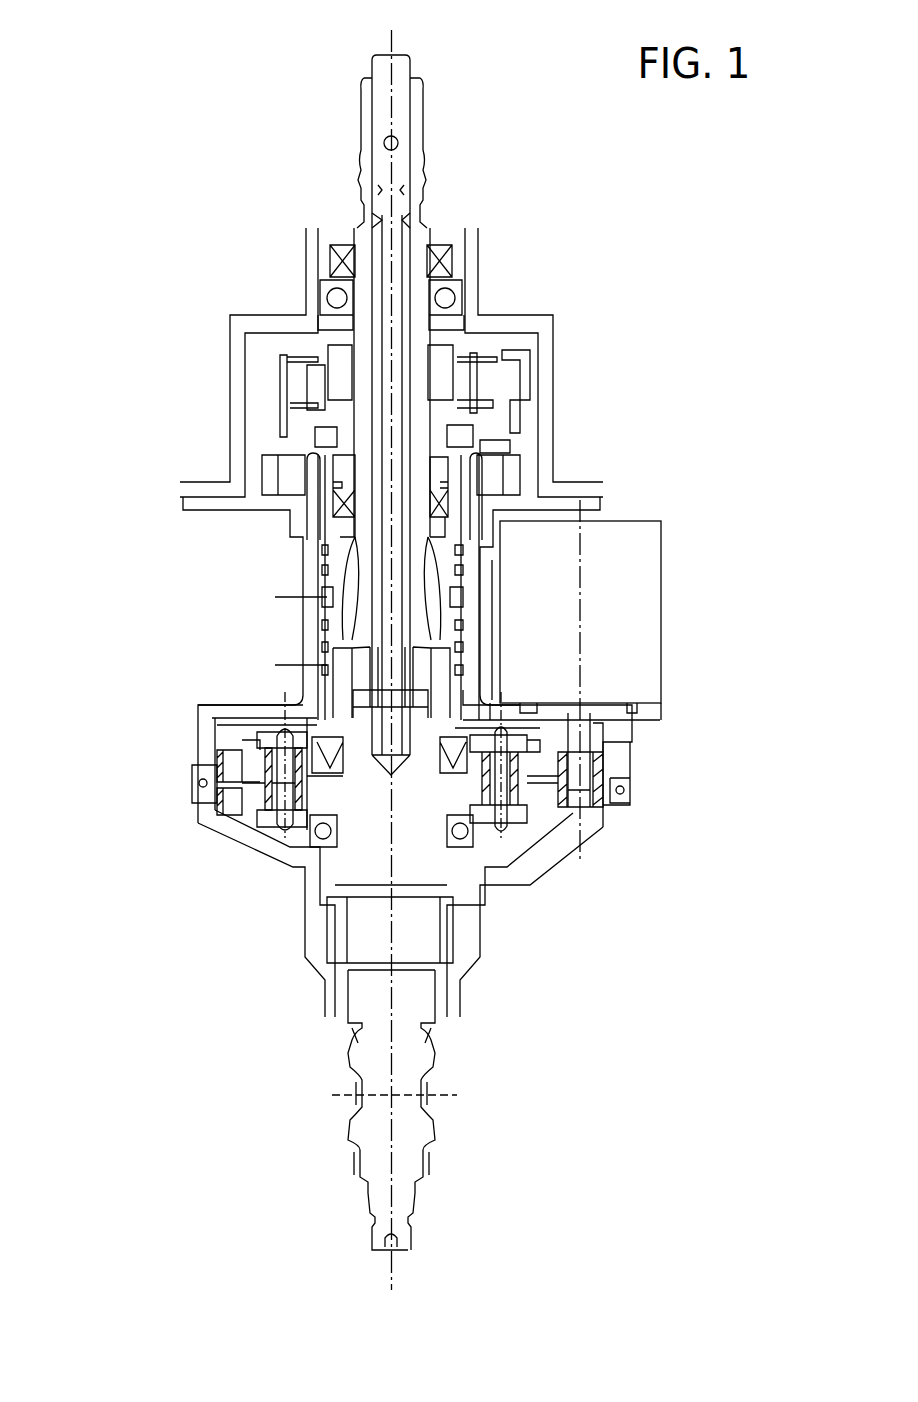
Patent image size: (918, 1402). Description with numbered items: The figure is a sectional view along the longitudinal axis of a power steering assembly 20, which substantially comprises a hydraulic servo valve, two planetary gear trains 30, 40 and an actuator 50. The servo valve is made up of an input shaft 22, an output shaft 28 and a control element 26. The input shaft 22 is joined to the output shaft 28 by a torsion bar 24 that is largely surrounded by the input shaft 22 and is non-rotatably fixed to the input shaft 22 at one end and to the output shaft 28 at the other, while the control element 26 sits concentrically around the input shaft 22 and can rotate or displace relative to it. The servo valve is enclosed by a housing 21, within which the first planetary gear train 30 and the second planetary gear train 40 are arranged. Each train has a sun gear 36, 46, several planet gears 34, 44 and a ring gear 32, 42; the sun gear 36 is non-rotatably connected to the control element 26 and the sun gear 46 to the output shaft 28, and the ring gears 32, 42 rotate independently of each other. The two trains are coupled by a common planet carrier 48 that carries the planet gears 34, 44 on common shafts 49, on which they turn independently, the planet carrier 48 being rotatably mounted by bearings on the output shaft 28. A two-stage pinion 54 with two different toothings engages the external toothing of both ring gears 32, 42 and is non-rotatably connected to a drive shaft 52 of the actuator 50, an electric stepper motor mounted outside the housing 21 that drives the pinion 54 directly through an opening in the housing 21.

The power steering assembly 20 is at (228, 202).
The housing 21 is at (237, 372).
The input shaft 22 is at (368, 105).
The torsion bar 24 is at (385, 63).
The control element 26 is at (428, 570).
The output shaft 28 is at (385, 1040).
The first planetary gear train 30 is at (213, 754).
The ring gear 32 is at (240, 762).
The planet gears 34 is at (278, 738).
The sun gear 36 is at (315, 722).
The second planetary gear train 40 is at (213, 802).
The ring gear 42 is at (238, 797).
The planet gears 44 is at (265, 810).
The sun gear 46 is at (305, 810).
The common planet carrier 48 is at (479, 833).
The common shafts 49 is at (295, 788).
The actuator 50 is at (612, 588).
The drive shaft 52 is at (587, 735).
The two-stage pinion 54 is at (590, 800).